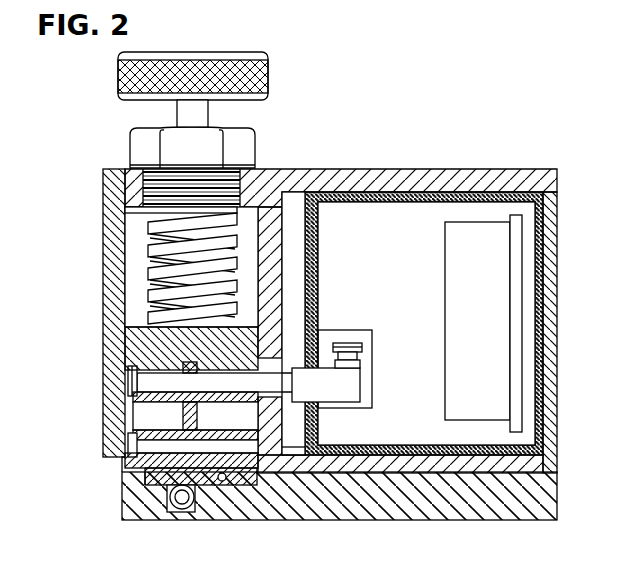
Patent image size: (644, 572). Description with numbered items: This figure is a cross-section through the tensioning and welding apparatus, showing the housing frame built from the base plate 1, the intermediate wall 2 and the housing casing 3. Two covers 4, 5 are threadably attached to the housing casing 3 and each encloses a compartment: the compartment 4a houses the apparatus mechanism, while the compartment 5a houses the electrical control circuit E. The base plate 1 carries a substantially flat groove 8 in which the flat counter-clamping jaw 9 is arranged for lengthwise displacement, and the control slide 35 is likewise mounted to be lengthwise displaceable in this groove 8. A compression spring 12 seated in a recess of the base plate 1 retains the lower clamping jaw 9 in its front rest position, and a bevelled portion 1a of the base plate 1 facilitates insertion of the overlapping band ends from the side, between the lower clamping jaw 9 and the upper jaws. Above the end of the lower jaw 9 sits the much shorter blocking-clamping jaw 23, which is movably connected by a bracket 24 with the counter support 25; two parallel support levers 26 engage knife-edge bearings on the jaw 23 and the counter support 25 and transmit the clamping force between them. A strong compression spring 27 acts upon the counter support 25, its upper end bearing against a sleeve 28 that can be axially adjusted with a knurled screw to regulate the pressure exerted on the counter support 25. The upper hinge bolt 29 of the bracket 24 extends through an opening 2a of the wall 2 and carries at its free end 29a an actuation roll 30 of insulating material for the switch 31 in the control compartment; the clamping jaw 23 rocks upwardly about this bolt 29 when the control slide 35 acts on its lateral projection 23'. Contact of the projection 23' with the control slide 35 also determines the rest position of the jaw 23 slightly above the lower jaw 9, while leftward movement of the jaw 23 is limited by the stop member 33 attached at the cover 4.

The base plate 1 is at (388, 500).
The bevelled portion 1a is at (135, 472).
The intermediate wall 2 is at (270, 252).
The opening 2a is at (272, 397).
The housing casing 3 is at (128, 186).
The cover 4 is at (103, 290).
The compartment 4a is at (137, 270).
The cover 5 is at (550, 330).
The compartment 5a is at (390, 212).
The groove 8 is at (223, 482).
The counter-clamping jaw 9 is at (157, 480).
The compression spring 12 is at (182, 510).
The blocking-clamping jaw 23 is at (155, 470).
The lateral projection 23' is at (319, 439).
The bracket 24 is at (200, 417).
The counter support 25 is at (135, 350).
The support levers 26 is at (135, 414).
The compression spring 27 is at (150, 250).
The sleeve 28 is at (150, 222).
The hinge bolt 29 is at (230, 60).
The free end 29a is at (288, 378).
The actuation roll 30 is at (350, 383).
The switch 31 is at (362, 356).
The stop member 33 is at (128, 426).
The control slide 35 is at (245, 482).
The electrical control circuit E is at (440, 284).